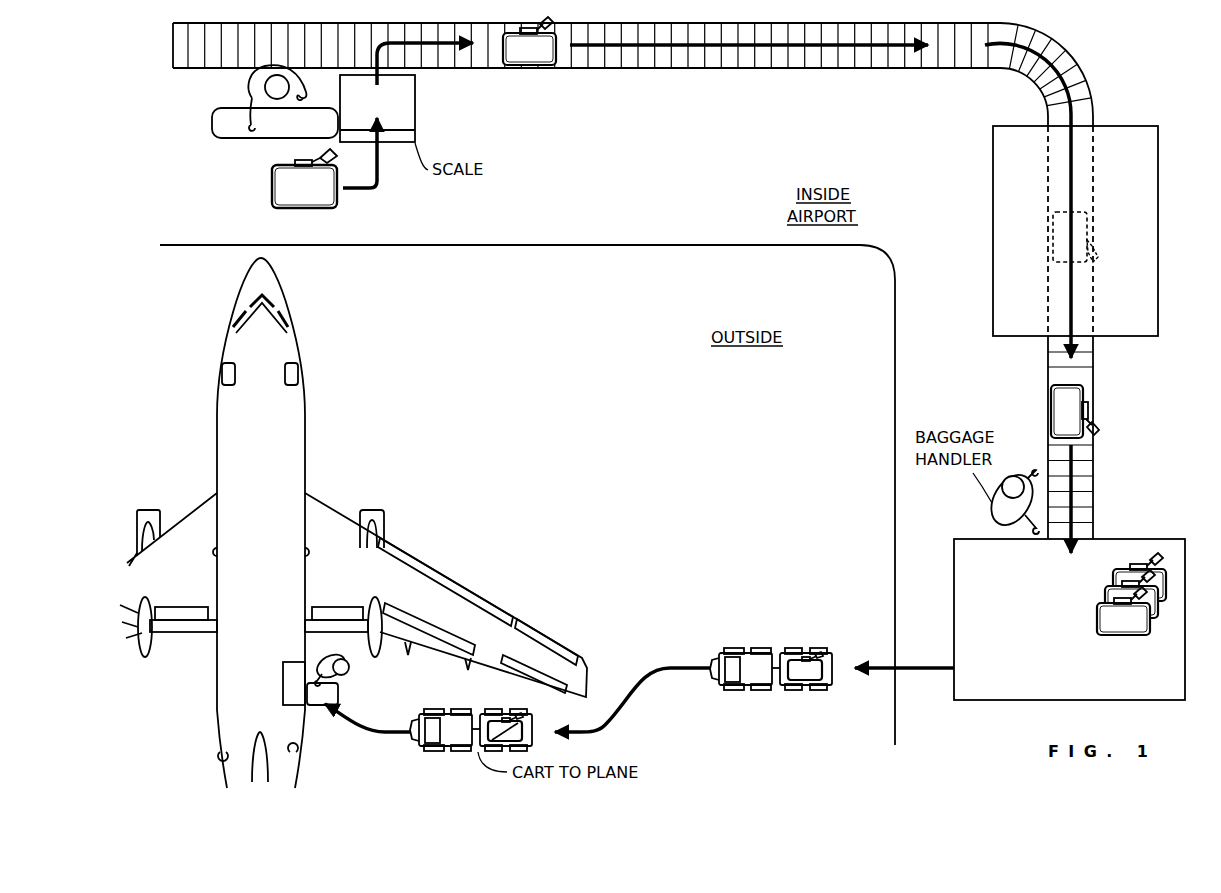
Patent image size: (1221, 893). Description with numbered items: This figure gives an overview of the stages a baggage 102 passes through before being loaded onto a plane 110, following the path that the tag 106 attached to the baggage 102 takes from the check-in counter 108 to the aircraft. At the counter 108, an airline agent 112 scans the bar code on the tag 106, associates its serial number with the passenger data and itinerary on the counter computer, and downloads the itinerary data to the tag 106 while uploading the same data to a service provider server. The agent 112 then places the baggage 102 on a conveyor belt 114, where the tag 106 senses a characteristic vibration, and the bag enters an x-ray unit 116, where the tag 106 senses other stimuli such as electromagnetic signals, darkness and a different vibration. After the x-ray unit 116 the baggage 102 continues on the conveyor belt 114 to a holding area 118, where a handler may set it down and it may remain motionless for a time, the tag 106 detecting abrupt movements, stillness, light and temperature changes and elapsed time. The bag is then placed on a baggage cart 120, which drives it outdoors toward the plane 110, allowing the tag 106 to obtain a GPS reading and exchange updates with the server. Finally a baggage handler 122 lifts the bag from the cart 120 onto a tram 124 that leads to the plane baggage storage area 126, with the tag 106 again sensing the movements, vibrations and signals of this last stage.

The baggage 102 is at (335, 206).
The tag 106 is at (328, 154).
The check-in counter 108 is at (212, 125).
The plane 110 is at (282, 293).
The airline agent 112 is at (247, 85).
The conveyor belt 114 is at (660, 69).
The x-ray unit 116 is at (993, 255).
The holding area 118 is at (1034, 680).
The baggage cart 120 is at (757, 652).
The baggage handler 122 is at (357, 667).
The tram 124 is at (310, 705).
The plane baggage storage area 126 is at (283, 662).